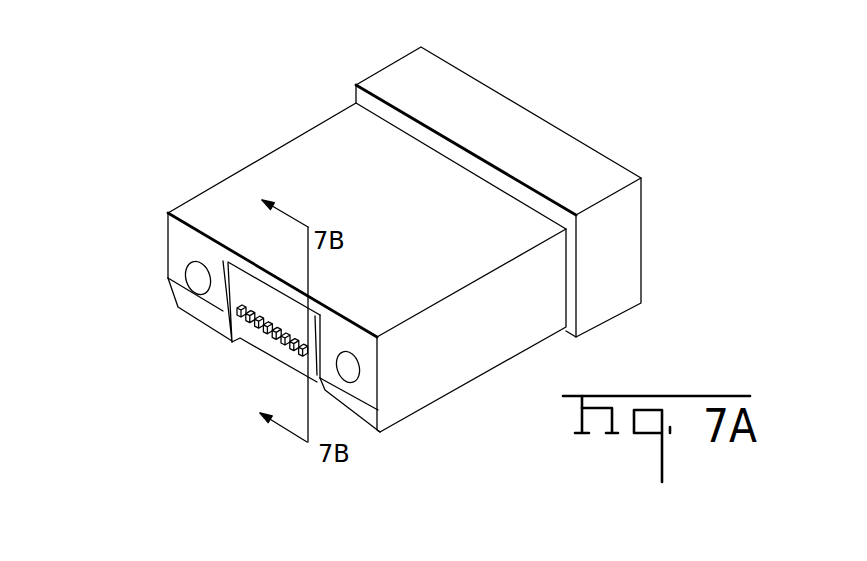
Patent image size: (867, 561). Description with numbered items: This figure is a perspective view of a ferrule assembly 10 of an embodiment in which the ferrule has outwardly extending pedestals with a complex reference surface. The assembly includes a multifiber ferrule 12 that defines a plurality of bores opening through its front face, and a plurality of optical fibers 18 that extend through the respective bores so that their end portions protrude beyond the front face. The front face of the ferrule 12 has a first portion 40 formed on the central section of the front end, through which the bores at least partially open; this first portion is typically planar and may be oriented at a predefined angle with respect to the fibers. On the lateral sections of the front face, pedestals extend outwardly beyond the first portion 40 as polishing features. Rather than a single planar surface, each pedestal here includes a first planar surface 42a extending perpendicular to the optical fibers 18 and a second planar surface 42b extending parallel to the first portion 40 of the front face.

The ferrule assembly 10 is at (530, 95).
The multifiber ferrule 12 is at (258, 172).
The optical fibers 18 is at (260, 326).
The first portion 40 is at (265, 345).
The first planar surface 42a is at (173, 235).
The second planar surface 42b is at (180, 303).